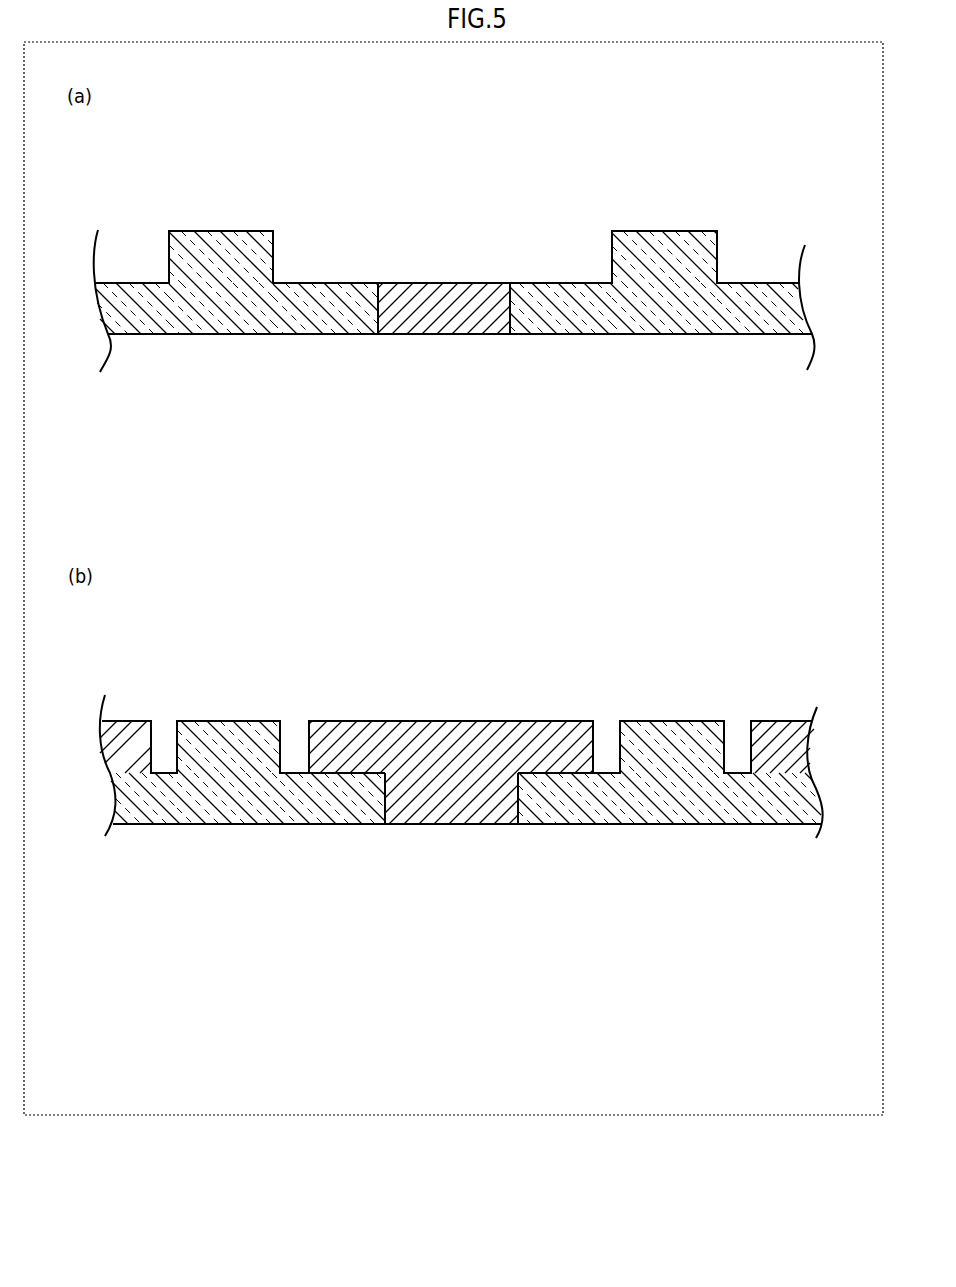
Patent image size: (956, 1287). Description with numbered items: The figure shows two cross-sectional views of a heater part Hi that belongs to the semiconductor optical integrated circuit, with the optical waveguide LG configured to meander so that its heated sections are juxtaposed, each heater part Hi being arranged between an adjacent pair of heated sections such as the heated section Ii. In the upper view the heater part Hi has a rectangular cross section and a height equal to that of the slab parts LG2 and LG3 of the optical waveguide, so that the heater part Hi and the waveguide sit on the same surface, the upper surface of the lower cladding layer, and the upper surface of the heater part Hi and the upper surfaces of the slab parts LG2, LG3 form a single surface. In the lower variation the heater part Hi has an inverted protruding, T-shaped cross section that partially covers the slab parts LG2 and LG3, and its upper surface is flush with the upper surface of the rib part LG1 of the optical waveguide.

The rib part LG1 is at (223, 336).
The slab part LG2 is at (319, 336).
The slab part LG3 is at (126, 336).
The heated section Ii is at (664, 231).
The heater part Hi is at (446, 282).